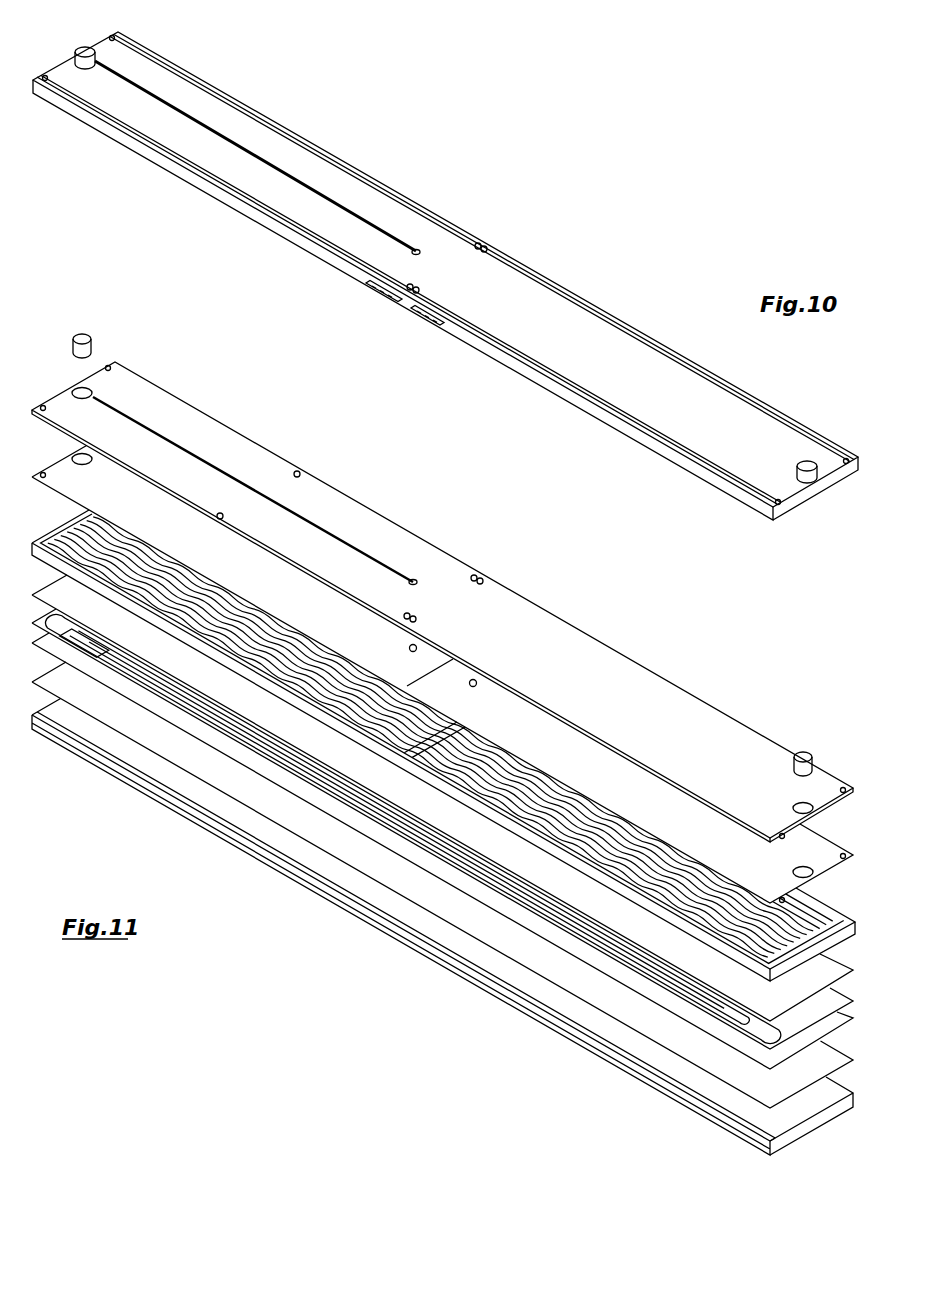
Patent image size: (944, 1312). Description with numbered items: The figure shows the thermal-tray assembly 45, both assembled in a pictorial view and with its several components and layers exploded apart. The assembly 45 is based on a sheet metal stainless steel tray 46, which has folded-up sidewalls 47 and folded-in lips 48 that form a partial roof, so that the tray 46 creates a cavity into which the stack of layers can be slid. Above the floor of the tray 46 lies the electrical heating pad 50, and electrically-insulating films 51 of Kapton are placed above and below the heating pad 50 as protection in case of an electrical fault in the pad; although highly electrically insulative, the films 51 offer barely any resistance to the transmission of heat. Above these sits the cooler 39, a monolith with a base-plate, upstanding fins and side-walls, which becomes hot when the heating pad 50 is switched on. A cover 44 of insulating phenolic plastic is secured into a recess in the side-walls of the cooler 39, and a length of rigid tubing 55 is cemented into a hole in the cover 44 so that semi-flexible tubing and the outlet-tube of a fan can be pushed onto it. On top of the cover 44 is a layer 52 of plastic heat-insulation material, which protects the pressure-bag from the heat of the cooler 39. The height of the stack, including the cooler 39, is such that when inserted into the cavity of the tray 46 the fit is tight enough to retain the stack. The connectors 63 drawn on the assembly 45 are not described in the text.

In FIG. 10, the thermal-tray assembly 45 is at (553, 332).
In FIG. 10, the electrical connectors 63 is at (413, 331).
In FIG. 11, the rigid tubing 55 is at (96, 338).
In FIG. 11, the layer of plastic heat-insulation material 52 is at (540, 635).
In FIG. 11, the cover 44 is at (625, 790).
In FIG. 11, the cooler 39 is at (256, 684).
In FIG. 11, the electrically-insulating films 51 is at (377, 838).
In FIG. 11, the electrical heating pad 50 is at (520, 905).
In FIG. 11, the tray 46 is at (790, 1118).
In FIG. 11, the folded-up sidewalls 47 is at (105, 768).
In FIG. 11, the folded-in lips 48 is at (48, 725).